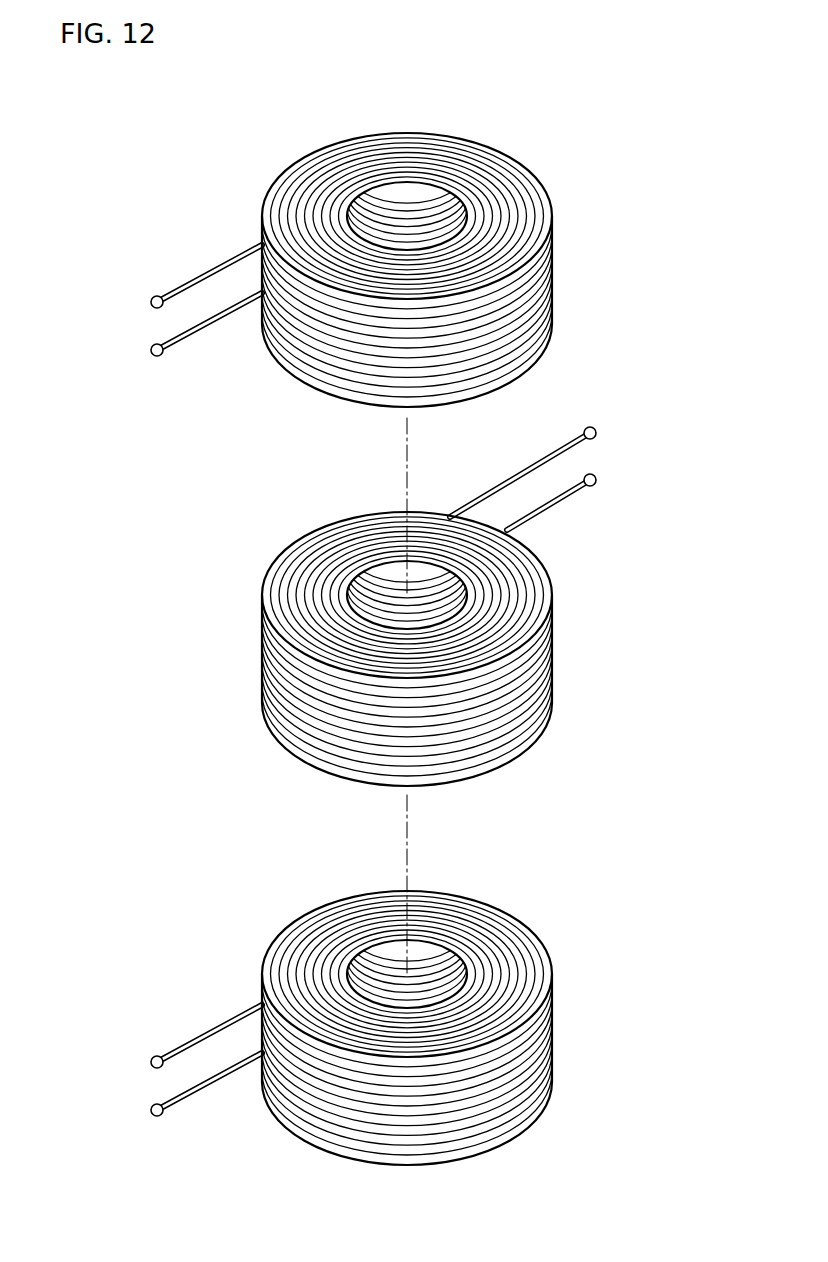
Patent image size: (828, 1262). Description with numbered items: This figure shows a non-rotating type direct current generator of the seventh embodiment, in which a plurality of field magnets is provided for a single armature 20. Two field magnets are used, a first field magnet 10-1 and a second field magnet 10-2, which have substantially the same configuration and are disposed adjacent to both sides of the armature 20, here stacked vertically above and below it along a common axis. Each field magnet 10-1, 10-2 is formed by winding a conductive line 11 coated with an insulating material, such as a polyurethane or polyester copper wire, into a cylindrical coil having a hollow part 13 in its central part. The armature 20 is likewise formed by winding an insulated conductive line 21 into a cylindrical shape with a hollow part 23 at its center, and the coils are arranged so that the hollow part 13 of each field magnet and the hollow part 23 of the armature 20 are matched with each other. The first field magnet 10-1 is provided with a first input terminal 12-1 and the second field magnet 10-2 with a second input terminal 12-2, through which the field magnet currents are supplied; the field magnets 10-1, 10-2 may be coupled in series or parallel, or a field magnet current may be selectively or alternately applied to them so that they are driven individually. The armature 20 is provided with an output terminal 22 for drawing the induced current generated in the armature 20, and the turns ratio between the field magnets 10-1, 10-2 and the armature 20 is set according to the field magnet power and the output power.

The first field magnet 10-1 is at (328, 234).
The second field magnet 10-2 is at (328, 993).
The conductive line 11 is at (542, 206).
The first input terminal 12-1 is at (156, 344).
The second input terminal 12-2 is at (156, 1104).
The hollow part 13 is at (410, 191).
The armature 20 is at (472, 604).
The conductive line 21 is at (541, 590).
The output terminal 22 is at (597, 478).
The hollow part 23 is at (373, 578).